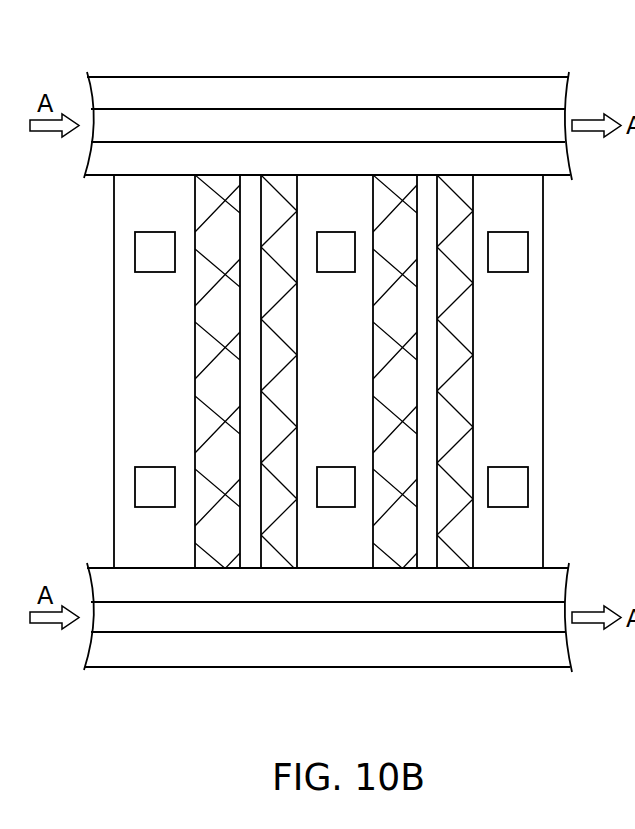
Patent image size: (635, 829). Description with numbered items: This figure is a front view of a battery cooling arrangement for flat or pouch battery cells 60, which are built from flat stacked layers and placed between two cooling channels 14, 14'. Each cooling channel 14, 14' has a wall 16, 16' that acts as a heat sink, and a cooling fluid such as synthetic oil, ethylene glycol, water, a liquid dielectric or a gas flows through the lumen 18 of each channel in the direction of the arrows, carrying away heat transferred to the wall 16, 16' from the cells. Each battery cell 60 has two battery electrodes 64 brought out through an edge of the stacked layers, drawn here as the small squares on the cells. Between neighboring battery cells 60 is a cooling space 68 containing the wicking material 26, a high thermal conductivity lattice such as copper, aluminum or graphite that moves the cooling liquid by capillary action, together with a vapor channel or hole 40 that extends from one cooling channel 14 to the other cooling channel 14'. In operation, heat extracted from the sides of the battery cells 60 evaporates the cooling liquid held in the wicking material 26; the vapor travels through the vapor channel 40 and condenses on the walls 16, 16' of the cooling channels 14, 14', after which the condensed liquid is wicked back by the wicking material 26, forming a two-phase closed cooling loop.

The cooling channel 14 is at (545, 29).
The cooling channel 14' is at (379, 699).
The wall 16 is at (353, 617).
The wall 16' is at (354, 126).
The lumen 18 is at (328, 370).
The wicking material 26 is at (281, 193).
The vapor channel 40 is at (248, 560).
The battery cell 60 is at (328, 371).
The battery electrode 64 is at (528, 248).
The cooling space 68 is at (277, 560).